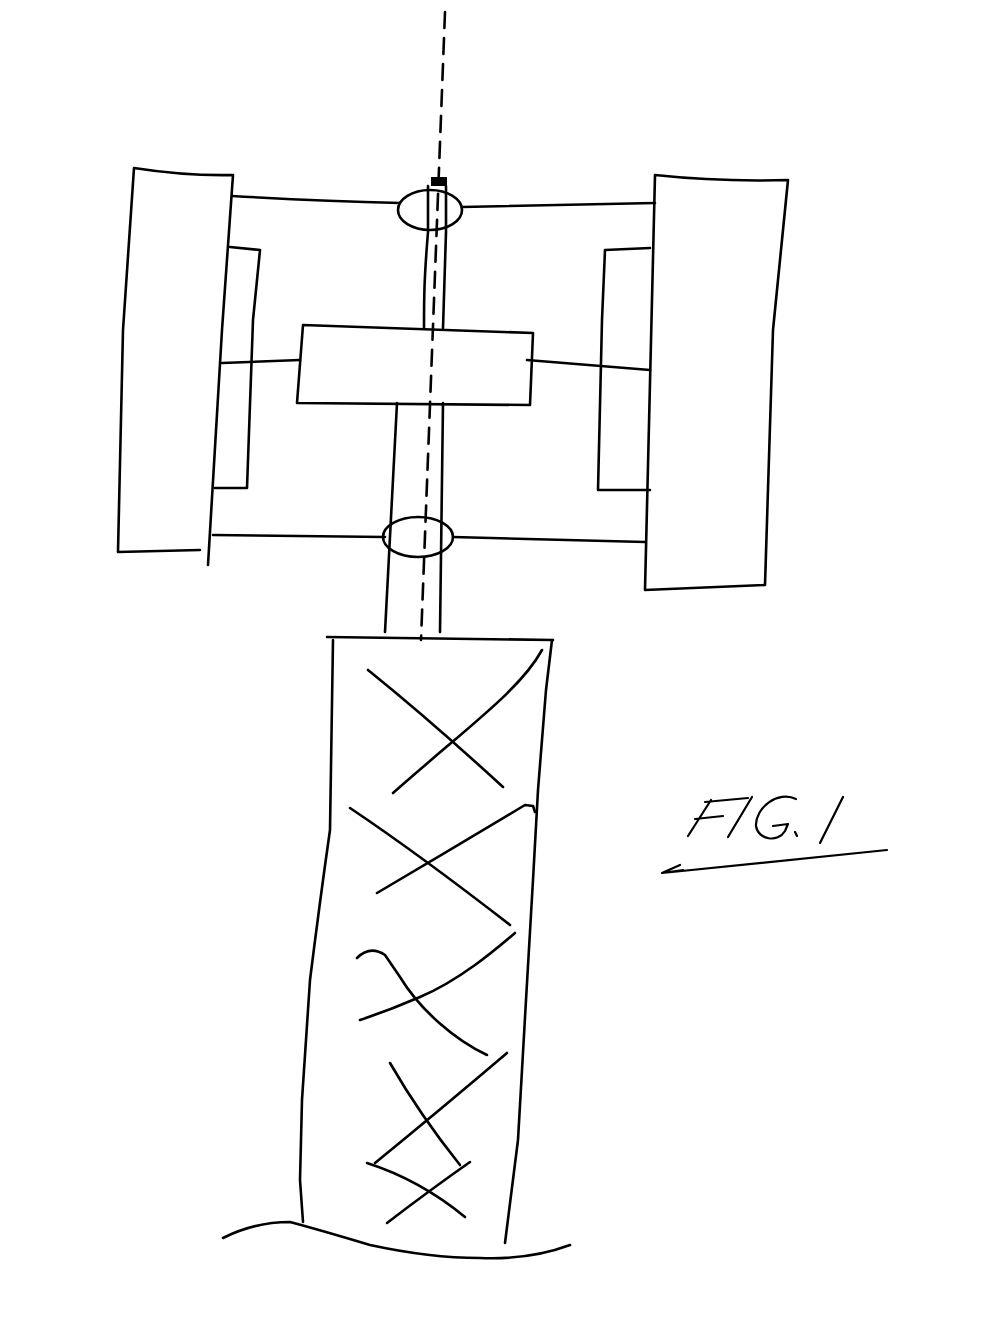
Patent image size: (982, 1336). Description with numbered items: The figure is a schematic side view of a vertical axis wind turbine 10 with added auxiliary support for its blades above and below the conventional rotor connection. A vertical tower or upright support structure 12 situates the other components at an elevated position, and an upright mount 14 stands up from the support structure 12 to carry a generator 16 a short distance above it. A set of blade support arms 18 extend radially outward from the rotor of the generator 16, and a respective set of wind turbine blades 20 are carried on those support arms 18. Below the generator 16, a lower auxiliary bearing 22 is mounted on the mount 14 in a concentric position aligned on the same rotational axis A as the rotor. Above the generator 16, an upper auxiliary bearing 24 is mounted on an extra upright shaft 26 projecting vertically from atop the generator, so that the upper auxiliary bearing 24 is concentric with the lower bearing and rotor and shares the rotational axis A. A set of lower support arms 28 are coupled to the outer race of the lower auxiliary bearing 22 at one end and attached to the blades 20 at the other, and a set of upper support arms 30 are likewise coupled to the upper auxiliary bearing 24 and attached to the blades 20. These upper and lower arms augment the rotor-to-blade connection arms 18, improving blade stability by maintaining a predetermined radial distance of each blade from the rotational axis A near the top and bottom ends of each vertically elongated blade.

The vertical axis wind turbine 10 is at (90, 104).
The upright support structure 12 is at (585, 783).
The upright mount 14 is at (360, 612).
The generator 16 is at (366, 398).
The blade support arms 18 is at (558, 372).
The wind turbine blades 20 is at (134, 257).
The lower auxiliary bearing 22 is at (455, 548).
The upper auxiliary bearing 24 is at (455, 195).
The upright shaft 26 is at (425, 287).
The lower support arms 28 is at (592, 548).
The upper support arms 30 is at (612, 205).
The rotational axis A is at (452, 30).